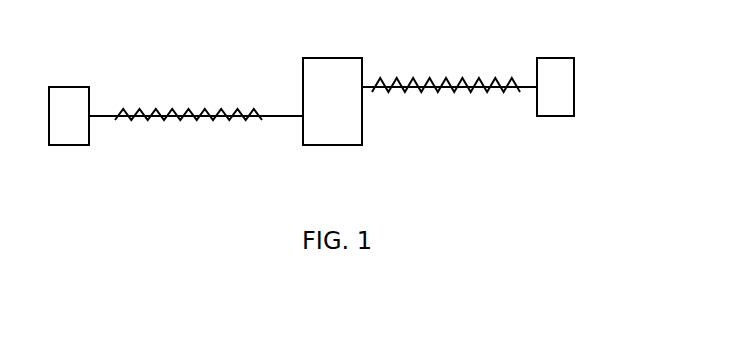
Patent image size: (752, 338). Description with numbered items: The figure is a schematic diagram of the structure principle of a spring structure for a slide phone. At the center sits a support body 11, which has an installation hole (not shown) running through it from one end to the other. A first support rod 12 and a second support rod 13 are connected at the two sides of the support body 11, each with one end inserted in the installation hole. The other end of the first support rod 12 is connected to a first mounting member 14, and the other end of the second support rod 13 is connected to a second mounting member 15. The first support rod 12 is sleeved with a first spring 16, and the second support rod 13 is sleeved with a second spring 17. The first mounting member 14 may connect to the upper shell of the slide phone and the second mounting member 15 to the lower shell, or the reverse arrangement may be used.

The support body 11 is at (325, 71).
The first support rod 12 is at (99, 113).
The second support rod 13 is at (368, 85).
The first mounting member 14 is at (77, 138).
The second mounting member 15 is at (559, 109).
The first spring 16 is at (200, 120).
The second spring 17 is at (442, 92).